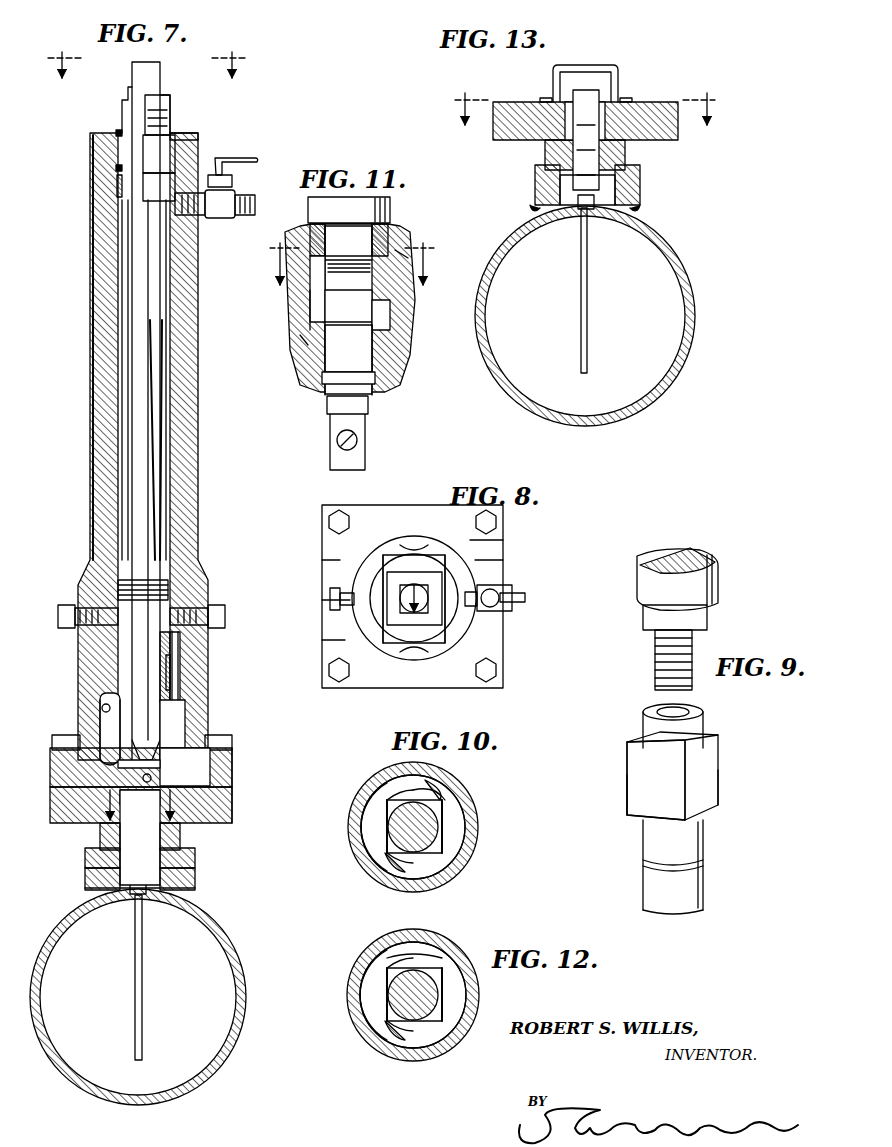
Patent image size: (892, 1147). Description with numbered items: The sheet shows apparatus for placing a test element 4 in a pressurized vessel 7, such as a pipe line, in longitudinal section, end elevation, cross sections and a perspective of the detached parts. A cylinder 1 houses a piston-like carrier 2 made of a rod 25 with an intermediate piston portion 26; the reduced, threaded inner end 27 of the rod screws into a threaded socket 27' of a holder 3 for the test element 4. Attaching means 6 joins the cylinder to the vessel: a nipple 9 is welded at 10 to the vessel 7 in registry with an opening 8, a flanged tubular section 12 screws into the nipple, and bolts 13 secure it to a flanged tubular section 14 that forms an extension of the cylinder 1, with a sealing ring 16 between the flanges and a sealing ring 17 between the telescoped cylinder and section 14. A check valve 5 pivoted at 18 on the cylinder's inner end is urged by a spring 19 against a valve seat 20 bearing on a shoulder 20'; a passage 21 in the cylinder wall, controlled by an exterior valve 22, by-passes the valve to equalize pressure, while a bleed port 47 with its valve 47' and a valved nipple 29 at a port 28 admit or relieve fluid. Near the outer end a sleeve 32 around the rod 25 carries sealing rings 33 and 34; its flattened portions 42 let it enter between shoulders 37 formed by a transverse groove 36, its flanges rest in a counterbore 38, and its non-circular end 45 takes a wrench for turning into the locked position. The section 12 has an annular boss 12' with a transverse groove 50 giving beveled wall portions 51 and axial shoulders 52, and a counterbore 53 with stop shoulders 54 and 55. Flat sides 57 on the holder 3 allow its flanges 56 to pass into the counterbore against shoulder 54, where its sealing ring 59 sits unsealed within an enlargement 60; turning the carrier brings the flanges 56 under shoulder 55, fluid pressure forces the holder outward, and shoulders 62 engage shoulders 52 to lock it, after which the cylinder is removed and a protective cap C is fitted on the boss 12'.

In FIG. 7, the cylinder 1 is at (88, 349).
In FIG. 8, the cylinder 1 is at (448, 549).
In FIG. 7, the piston-like carrier 2 is at (128, 411).
In FIG. 11, the piston-like carrier 2 is at (318, 193).
In FIG. 8, the piston-like carrier 2 is at (410, 561).
In FIG. 9, the piston-like carrier 2 is at (725, 573).
In FIG. 7, the holder 3 is at (140, 837).
In FIG. 11, the holder 3 is at (368, 359).
In FIG. 13, the holder 3 is at (540, 143).
In FIG. 9, the holder 3 is at (622, 743).
In FIG. 10, the holder 3 is at (398, 816).
In FIG. 12, the holder 3 is at (385, 991).
In FIG. 7, the test element 4 is at (150, 994).
In FIG. 13, the test element 4 is at (595, 319).
In FIG. 7, the check valve 5 is at (68, 736).
In FIG. 7, the attaching means 6 is at (50, 789).
In FIG. 8, the attaching means 6 is at (320, 653).
In FIG. 7, the vessel 7 is at (240, 976).
In FIG. 13, the vessel 7 is at (690, 251).
In FIG. 7, the opening 8 is at (150, 905).
In FIG. 13, the opening 8 is at (605, 229).
In FIG. 7, the nipple 9 is at (88, 871).
In FIG. 13, the nipple 9 is at (635, 181).
In FIG. 7, the weld 10 is at (65, 894).
In FIG. 13, the weld 10 is at (532, 216).
In FIG. 7, the flanged tubular section 12 is at (121, 810).
In FIG. 11, the flanged tubular section 12 is at (356, 302).
In FIG. 13, the flanged tubular section 12 is at (602, 136).
In FIG. 10, the flanged tubular section 12 is at (436, 827).
In FIG. 12, the flanged tubular section 12 is at (421, 977).
In FIG. 11, the annular boss 12' is at (318, 240).
In FIG. 13, the annular boss 12' is at (611, 103).
In FIG. 7, the bolts 13 is at (218, 736).
In FIG. 8, the bolts 13 is at (500, 525).
In FIG. 7, the flanged tubular section 14 is at (238, 769).
In FIG. 8, the flanged tubular section 14 is at (490, 646).
In FIG. 10, the flanged tubular section 14 is at (485, 813).
In FIG. 12, the flanged tubular section 14 is at (415, 931).
In FIG. 7, the sealing ring 16 is at (205, 774).
In FIG. 13, the sealing ring 16 is at (548, 101).
In FIG. 7, the sealing ring 17 is at (190, 646).
In FIG. 7, the pivot 18 is at (108, 709).
In FIG. 7, the spring 19 is at (110, 736).
In FIG. 7, the valve seat 20 is at (198, 726).
In FIG. 7, the shoulder 20' is at (204, 674).
In FIG. 7, the passage 21 is at (180, 669).
In FIG. 7, the valve 22 is at (218, 612).
In FIG. 7, the rod 25 is at (148, 386).
In FIG. 11, the rod 25 is at (385, 212).
In FIG. 8, the rod 25 is at (412, 631).
In FIG. 9, the rod 25 is at (705, 595).
In FIG. 10, the rod 25 is at (430, 849).
In FIG. 12, the rod 25 is at (413, 1021).
In FIG. 7, the piston portion 26 is at (148, 586).
In FIG. 9, the inner end 27 is at (649, 660).
In FIG. 9, the threaded socket 27' is at (649, 723).
In FIG. 7, the port 28 is at (190, 218).
In FIG. 7, the valved nipple 29 is at (245, 153).
In FIG. 8, the valved nipple 29 is at (512, 601).
In FIG. 7, the sleeve 32 is at (175, 136).
In FIG. 8, the sleeve 32 is at (428, 631).
In FIG. 7, the sealing ring 33 is at (112, 132).
In FIG. 7, the sealing ring 34 is at (116, 178).
In FIG. 7, the transverse groove 36 is at (175, 143).
In FIG. 8, the transverse groove 36 is at (392, 556).
In FIG. 8, the shoulders 37 is at (398, 651).
In FIG. 7, the counterbore 38 is at (96, 160).
In FIG. 7, the flattened portions 42 is at (158, 148).
In FIG. 7, the non-circular outer end 45 is at (128, 106).
In FIG. 8, the non-circular outer end 45 is at (440, 581).
In FIG. 7, the bleed port 47 is at (81, 607).
In FIG. 8, the valve 47' is at (320, 589).
In FIG. 7, the transverse groove 50 is at (150, 771).
In FIG. 11, the transverse groove 50 is at (333, 210).
In FIG. 10, the transverse groove 50 is at (375, 861).
In FIG. 12, the transverse groove 50 is at (380, 1026).
In FIG. 7, the beveled wall portions 51 is at (148, 781).
In FIG. 11, the beveled wall portions 51 is at (405, 259).
In FIG. 11, the shoulders 52 is at (318, 253).
In FIG. 7, the counterbore 53 is at (100, 841).
In FIG. 11, the counterbore 53 is at (310, 323).
In FIG. 10, the counterbore 53 is at (460, 796).
In FIG. 12, the counterbore 53 is at (466, 991).
In FIG. 11, the stop shoulder 54 is at (300, 346).
In FIG. 10, the stop shoulder 54 is at (440, 791).
In FIG. 11, the stop shoulder 55 is at (315, 306).
In FIG. 11, the flanges 56 is at (348, 306).
In FIG. 9, the flanges 56 is at (628, 787).
In FIG. 10, the flanges 56 is at (470, 806).
In FIG. 12, the flanges 56 is at (395, 951).
In FIG. 7, the flat sides 57 is at (140, 796).
In FIG. 11, the flat sides 57 is at (390, 319).
In FIG. 9, the flat sides 57 is at (656, 780).
In FIG. 10, the flat sides 57 is at (400, 791).
In FIG. 12, the flat sides 57 is at (440, 1011).
In FIG. 7, the sealing ring 59 is at (140, 814).
In FIG. 11, the sealing ring 59 is at (345, 366).
In FIG. 9, the sealing ring 59 is at (705, 863).
In FIG. 7, the enlargement 60 is at (90, 857).
In FIG. 11, the enlargement 60 is at (378, 379).
In FIG. 11, the shoulders 62 is at (338, 269).
In FIG. 9, the shoulders 62 is at (630, 753).
In FIG. 10, the shoulders 62 is at (385, 821).
In FIG. 12, the shoulders 62 is at (420, 951).
In FIG. 13, the protective cap C is at (605, 66).